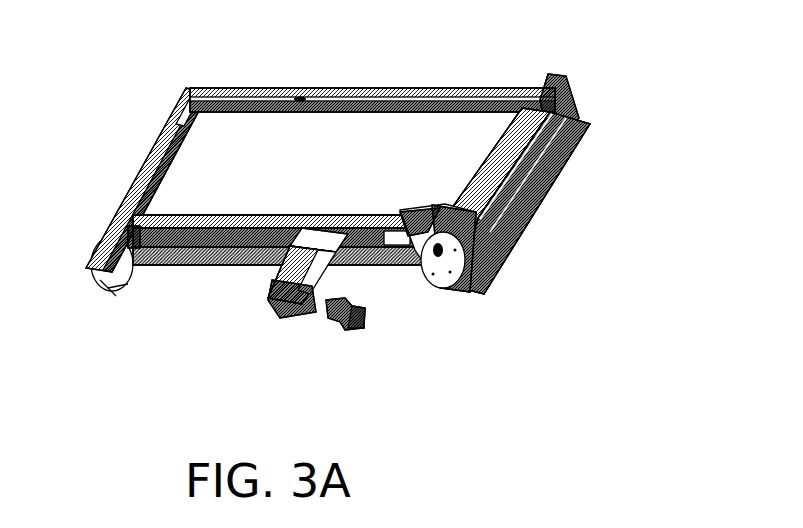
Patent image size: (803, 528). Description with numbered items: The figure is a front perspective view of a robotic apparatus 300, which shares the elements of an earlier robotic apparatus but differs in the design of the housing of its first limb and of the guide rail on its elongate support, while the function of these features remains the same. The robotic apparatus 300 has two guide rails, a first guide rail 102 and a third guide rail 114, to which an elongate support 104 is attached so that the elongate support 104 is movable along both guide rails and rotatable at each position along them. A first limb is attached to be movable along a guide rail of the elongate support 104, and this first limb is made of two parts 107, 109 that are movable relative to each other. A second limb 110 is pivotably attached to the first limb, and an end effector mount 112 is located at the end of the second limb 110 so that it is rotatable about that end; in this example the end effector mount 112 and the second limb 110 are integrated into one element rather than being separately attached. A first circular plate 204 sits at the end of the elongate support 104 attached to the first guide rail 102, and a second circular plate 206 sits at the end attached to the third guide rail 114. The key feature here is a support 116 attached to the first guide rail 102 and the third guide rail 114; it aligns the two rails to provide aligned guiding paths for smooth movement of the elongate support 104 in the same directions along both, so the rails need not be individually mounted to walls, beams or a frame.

The first guide rail 102 is at (563, 150).
The elongate support 104 is at (200, 268).
The first part of the first limb 107 is at (292, 265).
The second part of the first limb 109 is at (292, 314).
The second limb 110 is at (356, 326).
The end effector mount 112 is at (356, 317).
The third guide rail 114 is at (150, 158).
The support 116 is at (408, 82).
The first circular plate 204 is at (115, 280).
The second circular plate 206 is at (441, 290).
The robotic apparatus 300 is at (118, 372).